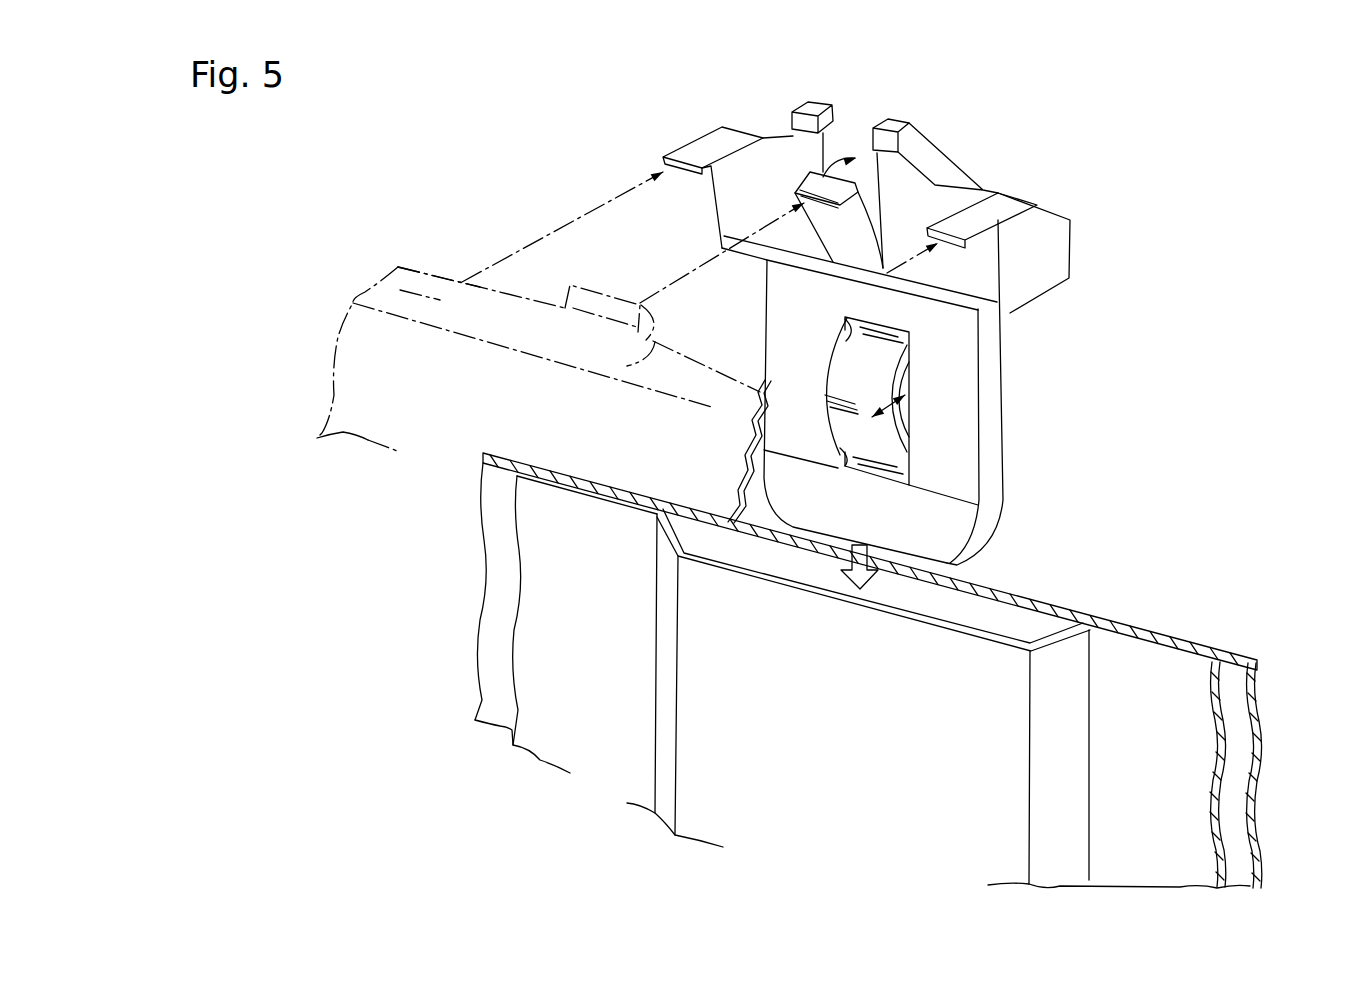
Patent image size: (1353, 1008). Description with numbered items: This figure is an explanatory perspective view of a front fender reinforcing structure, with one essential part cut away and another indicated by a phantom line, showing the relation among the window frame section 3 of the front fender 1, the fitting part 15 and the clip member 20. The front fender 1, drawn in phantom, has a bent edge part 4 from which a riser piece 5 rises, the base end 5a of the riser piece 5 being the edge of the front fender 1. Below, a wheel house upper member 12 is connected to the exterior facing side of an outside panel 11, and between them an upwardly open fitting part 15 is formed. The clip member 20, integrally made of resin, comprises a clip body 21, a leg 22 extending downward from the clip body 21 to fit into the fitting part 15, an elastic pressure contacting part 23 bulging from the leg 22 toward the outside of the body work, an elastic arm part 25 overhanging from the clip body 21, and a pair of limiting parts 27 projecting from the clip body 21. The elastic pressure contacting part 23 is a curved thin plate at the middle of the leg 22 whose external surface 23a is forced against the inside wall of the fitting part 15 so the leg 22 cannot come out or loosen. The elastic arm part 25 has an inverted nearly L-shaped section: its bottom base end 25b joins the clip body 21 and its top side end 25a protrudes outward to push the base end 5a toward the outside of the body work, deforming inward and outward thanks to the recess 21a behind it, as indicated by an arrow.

The front fender 1 is at (564, 321).
The window frame section 3 is at (462, 282).
The bent edge part 4 is at (418, 285).
The riser piece 5 is at (590, 283).
The base end 5a is at (625, 366).
The outside panel 11 is at (1235, 703).
The wheel house upper member 12 is at (1147, 685).
The fitting part 15 is at (1020, 635).
The clip member 20 is at (900, 312).
The clip body 21 is at (1037, 226).
The recess 21a is at (867, 170).
The leg 22 is at (995, 422).
The elastic pressure contacting part 23 is at (897, 385).
The external surface 23a is at (827, 391).
The elastic arm part 25 is at (784, 205).
The top side end 25a is at (806, 179).
The bottom base end 25b is at (848, 268).
The limiting parts 27 is at (707, 147).